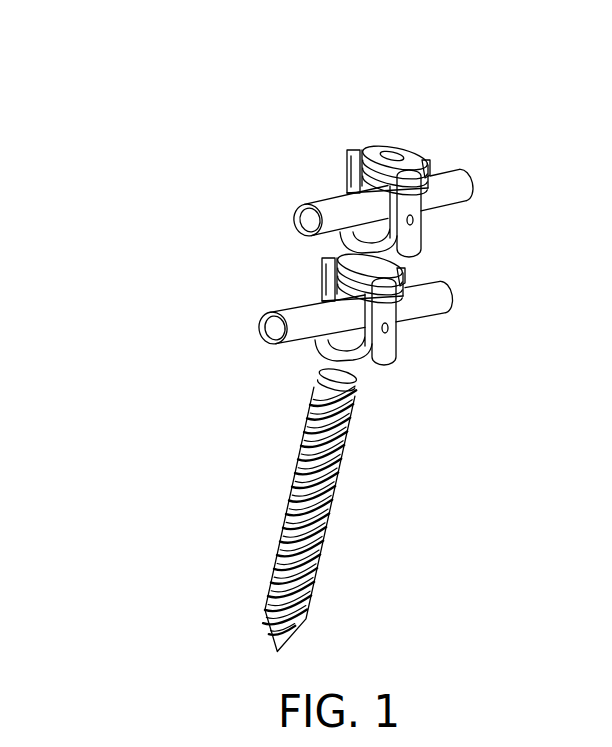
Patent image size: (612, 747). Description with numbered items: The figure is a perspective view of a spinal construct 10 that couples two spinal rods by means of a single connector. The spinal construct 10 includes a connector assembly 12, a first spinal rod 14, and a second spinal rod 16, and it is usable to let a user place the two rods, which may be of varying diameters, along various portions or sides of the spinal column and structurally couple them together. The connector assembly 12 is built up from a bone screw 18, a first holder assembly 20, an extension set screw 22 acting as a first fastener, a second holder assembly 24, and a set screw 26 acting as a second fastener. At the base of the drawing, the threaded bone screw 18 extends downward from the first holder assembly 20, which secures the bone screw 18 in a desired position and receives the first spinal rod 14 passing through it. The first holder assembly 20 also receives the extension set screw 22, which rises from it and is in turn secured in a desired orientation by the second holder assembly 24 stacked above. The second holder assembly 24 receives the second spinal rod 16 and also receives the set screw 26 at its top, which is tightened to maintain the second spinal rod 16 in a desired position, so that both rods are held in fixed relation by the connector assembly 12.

The spinal construct 10 is at (250, 71).
The connector assembly 12 is at (161, 342).
The first spinal rod 14 is at (443, 298).
The second spinal rod 16 is at (455, 187).
The bone screw 18 is at (338, 505).
The first holder assembly 20 is at (330, 350).
The extension set screw 22 is at (320, 290).
The second holder assembly 24 is at (345, 181).
The set screw 26 is at (403, 152).